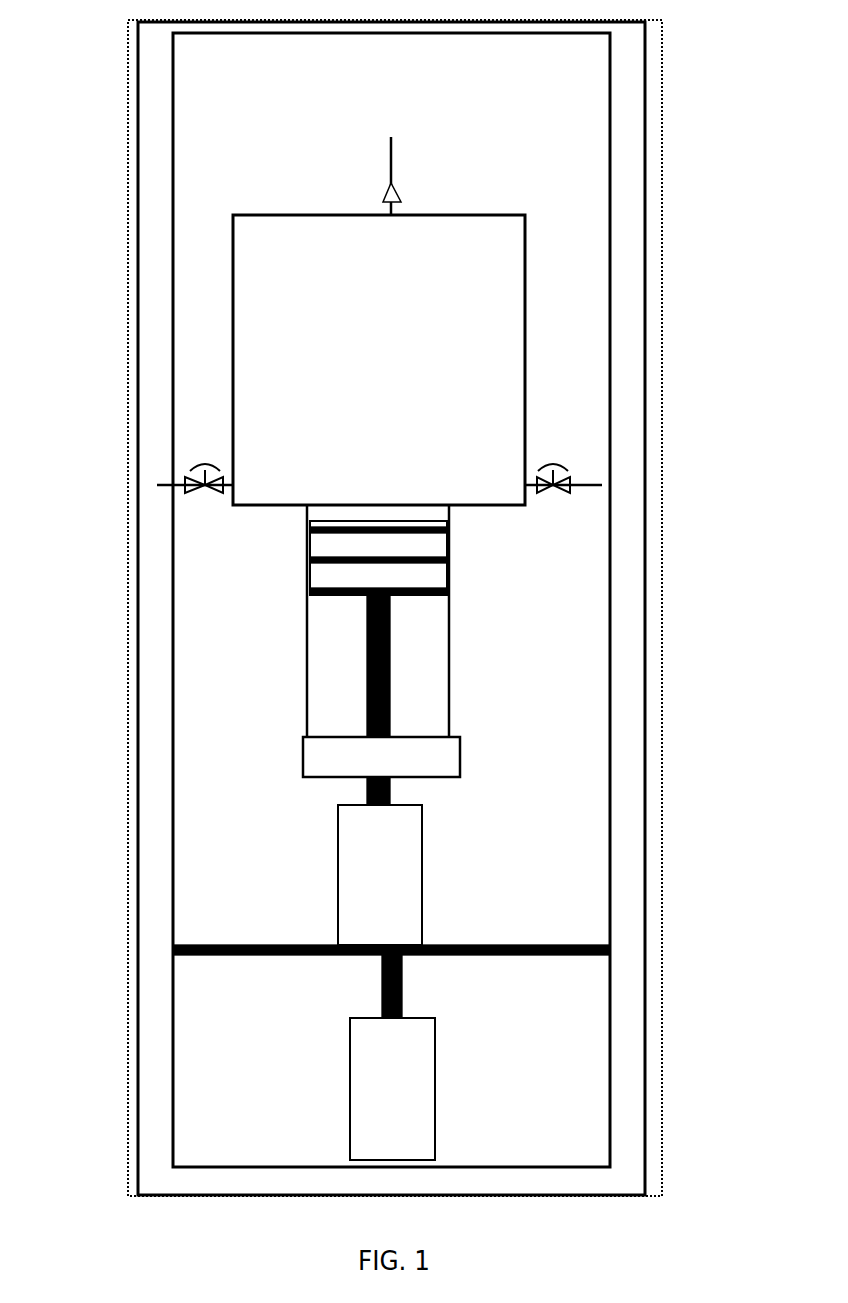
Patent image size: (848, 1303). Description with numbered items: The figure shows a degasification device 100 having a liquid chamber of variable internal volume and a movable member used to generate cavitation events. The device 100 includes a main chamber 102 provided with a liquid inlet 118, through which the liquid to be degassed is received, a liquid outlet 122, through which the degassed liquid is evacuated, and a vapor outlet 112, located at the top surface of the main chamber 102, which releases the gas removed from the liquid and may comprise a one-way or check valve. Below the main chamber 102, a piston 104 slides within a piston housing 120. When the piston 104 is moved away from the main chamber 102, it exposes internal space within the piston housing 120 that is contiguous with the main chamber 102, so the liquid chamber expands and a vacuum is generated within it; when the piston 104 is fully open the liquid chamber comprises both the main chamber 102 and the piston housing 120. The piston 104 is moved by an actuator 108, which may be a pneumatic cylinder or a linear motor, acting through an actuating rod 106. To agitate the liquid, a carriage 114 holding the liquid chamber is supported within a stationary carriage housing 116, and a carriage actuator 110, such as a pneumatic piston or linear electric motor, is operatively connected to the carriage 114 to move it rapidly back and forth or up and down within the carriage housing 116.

The degasification device 100 is at (352, 598).
The main chamber 102 is at (273, 285).
The piston 104 is at (430, 546).
The actuating rod 106 is at (400, 695).
The actuator 108 is at (396, 872).
The carriage actuator 110 is at (408, 1097).
The vapor outlet 112 is at (375, 178).
The carriage 114 is at (391, 976).
The carriage housing 116 is at (391, 600).
The liquid inlet 118 is at (555, 495).
The piston housing 120 is at (307, 652).
The liquid outlet 122 is at (205, 495).